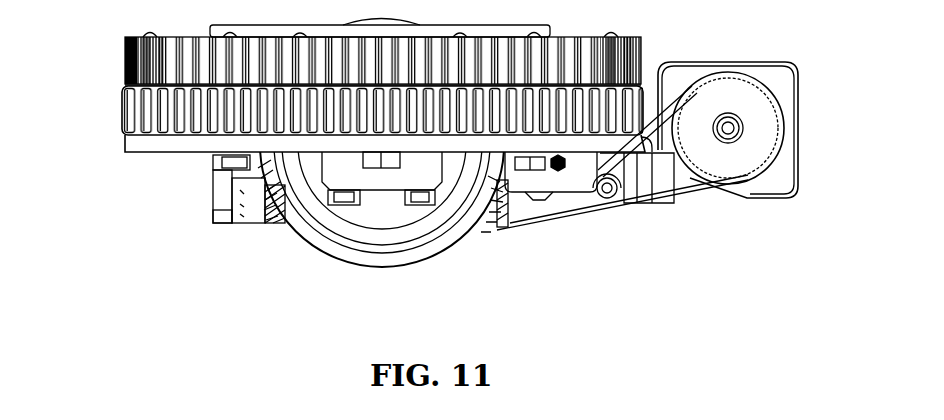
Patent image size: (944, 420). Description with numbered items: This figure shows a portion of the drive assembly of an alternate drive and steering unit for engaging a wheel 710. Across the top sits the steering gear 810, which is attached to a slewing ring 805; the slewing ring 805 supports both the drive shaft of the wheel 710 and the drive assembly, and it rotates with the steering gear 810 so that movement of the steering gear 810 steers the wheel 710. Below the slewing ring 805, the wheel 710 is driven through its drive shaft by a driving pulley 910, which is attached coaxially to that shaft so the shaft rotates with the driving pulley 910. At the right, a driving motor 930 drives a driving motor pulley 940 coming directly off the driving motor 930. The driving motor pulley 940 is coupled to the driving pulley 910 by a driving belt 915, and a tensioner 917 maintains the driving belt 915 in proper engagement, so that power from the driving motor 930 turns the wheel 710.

The wheel 710 is at (347, 261).
The slewing ring 805 is at (134, 113).
The steering gear 810 is at (125, 50).
The driving pulley 910 is at (290, 220).
The driving belt 915 is at (600, 214).
The tensioner 917 is at (577, 180).
The driving motor 930 is at (778, 190).
The driving motor pulley 940 is at (733, 98).